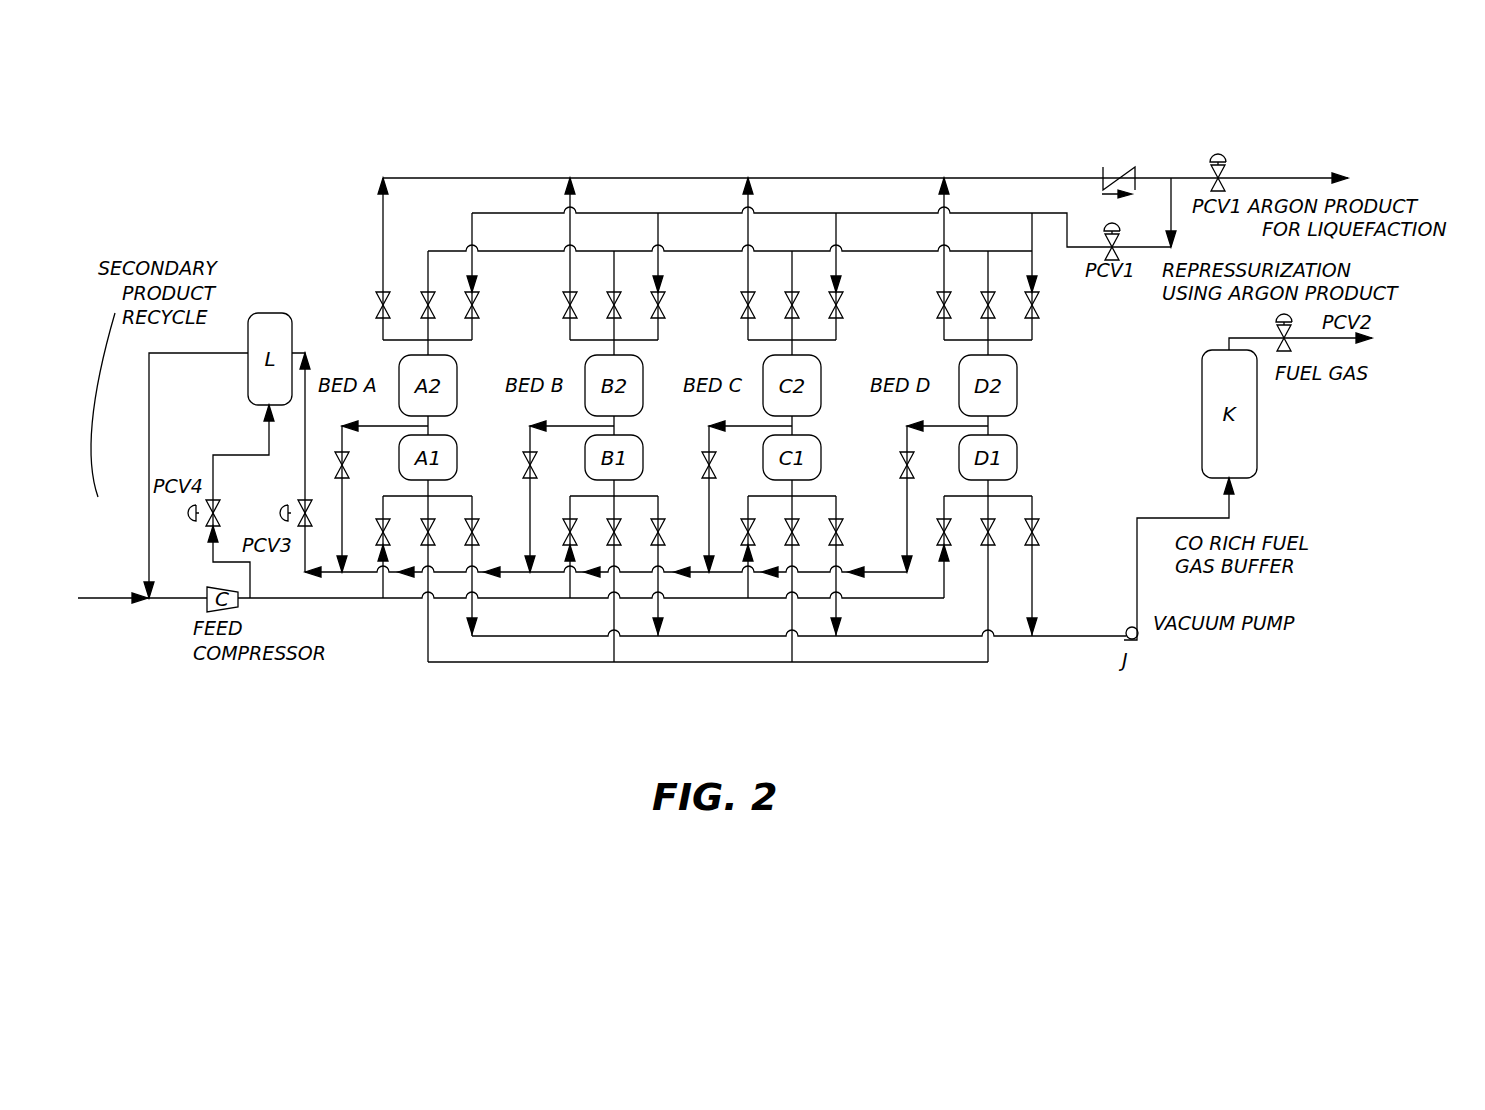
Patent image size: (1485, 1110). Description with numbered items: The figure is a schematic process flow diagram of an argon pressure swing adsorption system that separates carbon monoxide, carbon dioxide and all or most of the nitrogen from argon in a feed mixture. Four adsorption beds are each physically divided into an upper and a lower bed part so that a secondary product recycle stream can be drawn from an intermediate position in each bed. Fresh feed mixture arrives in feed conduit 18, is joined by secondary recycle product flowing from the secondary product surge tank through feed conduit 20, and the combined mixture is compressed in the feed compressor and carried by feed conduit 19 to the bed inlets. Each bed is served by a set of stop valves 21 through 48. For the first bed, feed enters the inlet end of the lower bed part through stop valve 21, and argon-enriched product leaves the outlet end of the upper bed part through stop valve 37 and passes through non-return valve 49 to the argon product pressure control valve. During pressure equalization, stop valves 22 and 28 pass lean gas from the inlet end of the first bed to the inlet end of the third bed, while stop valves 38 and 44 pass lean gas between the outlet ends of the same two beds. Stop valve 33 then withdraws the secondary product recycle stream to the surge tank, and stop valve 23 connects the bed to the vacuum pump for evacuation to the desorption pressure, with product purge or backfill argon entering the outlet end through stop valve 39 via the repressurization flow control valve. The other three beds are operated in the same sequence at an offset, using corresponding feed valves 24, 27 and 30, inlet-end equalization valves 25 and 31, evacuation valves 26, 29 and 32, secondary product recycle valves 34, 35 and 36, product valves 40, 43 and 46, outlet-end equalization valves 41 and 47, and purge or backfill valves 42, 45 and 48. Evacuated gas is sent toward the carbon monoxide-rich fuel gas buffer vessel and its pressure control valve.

The feed conduit 18 is at (124, 598).
The feed conduit 19 is at (188, 598).
The feed conduit 20 is at (149, 413).
The stop valve 21 is at (379, 531).
The stop valve 22 is at (424, 531).
The stop valve 23 is at (468, 531).
The stop valve 24 is at (566, 531).
The stop valve 25 is at (610, 531).
The stop valve 26 is at (654, 531).
The stop valve 27 is at (744, 531).
The stop valve 28 is at (788, 531).
The stop valve 29 is at (832, 531).
The stop valve 30 is at (940, 531).
The stop valve 31 is at (984, 531).
The stop valve 32 is at (1028, 531).
The stop valve 33 is at (338, 466).
The stop valve 34 is at (526, 466).
The stop valve 35 is at (705, 466).
The stop valve 36 is at (903, 466).
The stop valve 37 is at (379, 303).
The stop valve 38 is at (424, 303).
The stop valve 39 is at (468, 303).
The stop valve 40 is at (566, 303).
The stop valve 41 is at (610, 303).
The stop valve 42 is at (654, 303).
The stop valve 43 is at (744, 303).
The stop valve 44 is at (788, 303).
The stop valve 45 is at (832, 303).
The stop valve 46 is at (940, 303).
The stop valve 47 is at (984, 303).
The stop valve 48 is at (1028, 303).
The non-return valve 49 is at (1119, 169).